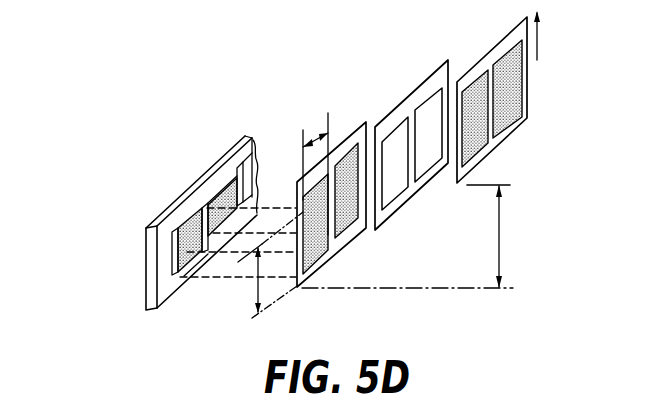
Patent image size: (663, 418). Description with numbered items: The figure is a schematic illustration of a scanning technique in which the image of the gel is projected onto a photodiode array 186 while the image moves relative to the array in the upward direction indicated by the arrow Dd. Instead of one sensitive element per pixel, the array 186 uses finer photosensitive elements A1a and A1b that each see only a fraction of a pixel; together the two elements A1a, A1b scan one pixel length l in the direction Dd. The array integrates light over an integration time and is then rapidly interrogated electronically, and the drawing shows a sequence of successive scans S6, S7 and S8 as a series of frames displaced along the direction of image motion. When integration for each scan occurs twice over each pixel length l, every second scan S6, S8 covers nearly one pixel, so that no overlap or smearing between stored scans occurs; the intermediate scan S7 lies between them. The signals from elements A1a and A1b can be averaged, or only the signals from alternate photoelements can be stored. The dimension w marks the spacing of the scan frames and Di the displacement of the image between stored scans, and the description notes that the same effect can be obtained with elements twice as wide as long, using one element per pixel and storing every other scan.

The photodiode array 186 is at (144, 256).
The photosensitive element A1a is at (192, 226).
The photosensitive element A1b is at (224, 188).
The scan S6 is at (330, 222).
The scan S7 is at (411, 159).
The scan S8 is at (492, 101).
The screen spacing width w is at (318, 128).
The pixel length l is at (257, 287).
The direction of image movement Dd is at (550, 35).
The image displacement distance Di is at (502, 230).